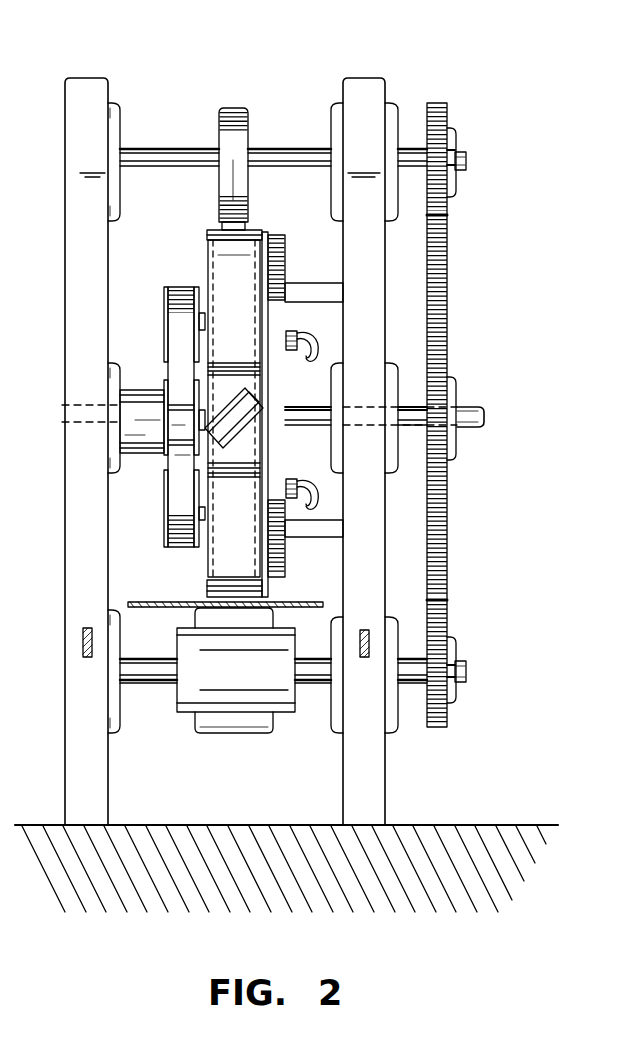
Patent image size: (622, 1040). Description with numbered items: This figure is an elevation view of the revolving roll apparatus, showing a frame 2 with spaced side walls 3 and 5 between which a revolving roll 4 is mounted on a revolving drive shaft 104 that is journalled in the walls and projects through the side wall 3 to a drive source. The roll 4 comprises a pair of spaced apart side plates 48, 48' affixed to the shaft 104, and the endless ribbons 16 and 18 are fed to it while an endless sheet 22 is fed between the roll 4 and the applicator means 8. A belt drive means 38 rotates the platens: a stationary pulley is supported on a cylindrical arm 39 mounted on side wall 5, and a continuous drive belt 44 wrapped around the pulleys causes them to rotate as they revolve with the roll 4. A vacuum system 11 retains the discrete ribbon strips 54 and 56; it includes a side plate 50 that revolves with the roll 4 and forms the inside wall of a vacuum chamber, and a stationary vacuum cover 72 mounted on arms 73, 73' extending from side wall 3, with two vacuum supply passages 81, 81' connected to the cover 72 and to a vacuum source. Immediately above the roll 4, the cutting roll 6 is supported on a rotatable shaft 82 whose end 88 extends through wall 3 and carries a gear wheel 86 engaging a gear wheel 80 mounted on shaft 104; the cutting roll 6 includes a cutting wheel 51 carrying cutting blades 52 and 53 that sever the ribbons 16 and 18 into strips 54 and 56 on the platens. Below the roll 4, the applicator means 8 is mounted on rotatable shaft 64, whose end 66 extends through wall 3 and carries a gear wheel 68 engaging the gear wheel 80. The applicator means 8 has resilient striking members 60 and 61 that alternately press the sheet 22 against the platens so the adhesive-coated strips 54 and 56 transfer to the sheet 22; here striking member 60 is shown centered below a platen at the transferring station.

The frame 2 is at (45, 292).
The side wall 3 is at (365, 78).
The revolving roll 4 is at (205, 270).
The side wall 5 is at (90, 78).
The cutting roll 6 is at (213, 133).
The applicator means 8 is at (177, 716).
The vacuum system 11 is at (330, 345).
The ribbon 16 is at (246, 223).
The ribbon 18 is at (222, 228).
The sheet 22 is at (300, 608).
The belt drive means 38 is at (164, 506).
The cylindrical arm 39 is at (150, 390).
The drive belt 44 is at (180, 463).
The side plate 48 is at (191, 249).
The side plate 48' is at (290, 409).
The side plate 50 is at (268, 258).
The cutting wheel 51 is at (238, 150).
The cutting blade 52 is at (222, 222).
The cutting blade 53 is at (236, 107).
The ribbon strip 54 is at (240, 475).
The ribbon strip 56 is at (227, 405).
The striking member 60 is at (190, 612).
The striking member 61 is at (272, 722).
The shaft 64 is at (150, 682).
The end of shaft 66 is at (467, 672).
The gear wheel 68 is at (437, 728).
The vacuum cover 72 is at (287, 362).
The arm 73 is at (314, 269).
The arm 73' is at (314, 555).
The gear wheel 80 is at (447, 290).
The vacuum supply passage 81 is at (313, 335).
The vacuum supply passage 81' is at (303, 469).
The shaft 82 is at (165, 148).
The gear wheel 86 is at (435, 103).
The end of shaft 88 is at (467, 160).
The drive shaft 104 is at (467, 407).